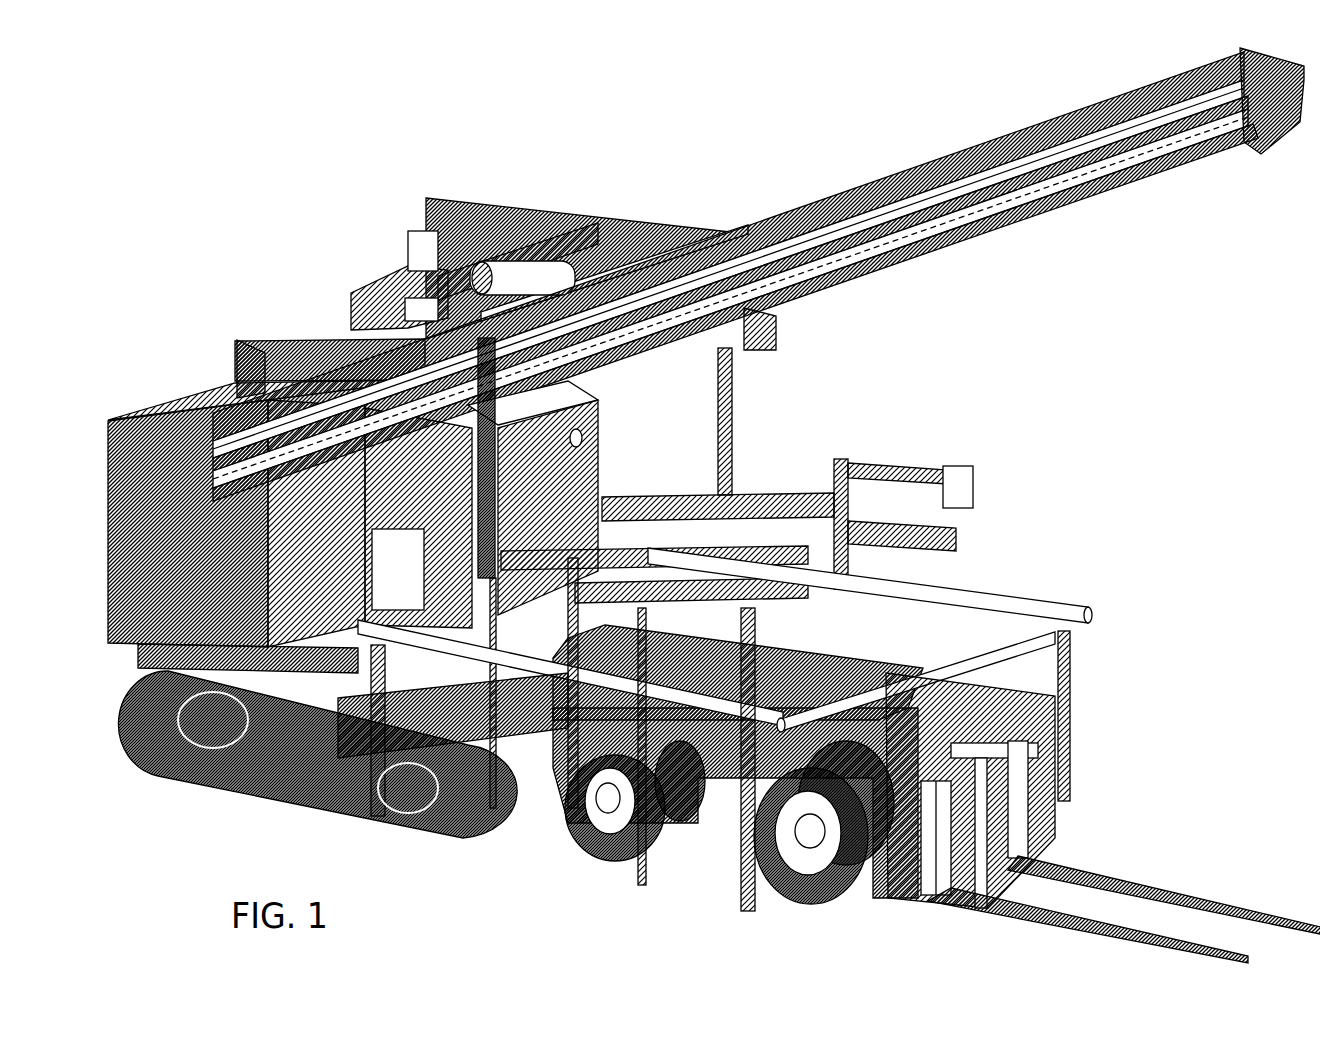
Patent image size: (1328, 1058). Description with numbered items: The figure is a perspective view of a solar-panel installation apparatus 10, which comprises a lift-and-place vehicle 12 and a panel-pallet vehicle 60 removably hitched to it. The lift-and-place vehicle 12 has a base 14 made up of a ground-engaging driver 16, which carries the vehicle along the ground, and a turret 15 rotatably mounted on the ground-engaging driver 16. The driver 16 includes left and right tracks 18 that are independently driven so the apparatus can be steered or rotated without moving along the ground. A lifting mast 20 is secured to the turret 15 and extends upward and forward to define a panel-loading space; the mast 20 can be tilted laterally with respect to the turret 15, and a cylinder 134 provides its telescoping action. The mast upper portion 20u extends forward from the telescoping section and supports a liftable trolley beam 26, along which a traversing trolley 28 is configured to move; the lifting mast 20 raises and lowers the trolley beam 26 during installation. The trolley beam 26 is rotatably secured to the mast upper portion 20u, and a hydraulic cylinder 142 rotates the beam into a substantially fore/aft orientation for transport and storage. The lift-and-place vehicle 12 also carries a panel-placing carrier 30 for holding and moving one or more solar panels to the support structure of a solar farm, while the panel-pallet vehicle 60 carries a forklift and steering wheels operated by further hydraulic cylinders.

The solar-panel installation apparatus 10 is at (707, 505).
The lift-and-place vehicle 12 is at (699, 274).
The base 14 is at (290, 499).
The turret 15 is at (148, 437).
The ground-engaging driver 16 is at (317, 775).
The track 18 is at (262, 758).
The lifting mast 20 is at (457, 448).
The mast upper portion 20u is at (553, 222).
The trolley beam 26 is at (797, 210).
The traversing trolley 28 is at (758, 316).
The panel-placing carrier 30 is at (1123, 526).
The panel-pallet vehicle 60 is at (1078, 673).
The cylinder 134 is at (480, 490).
The hydraulic cylinder 142 is at (495, 268).